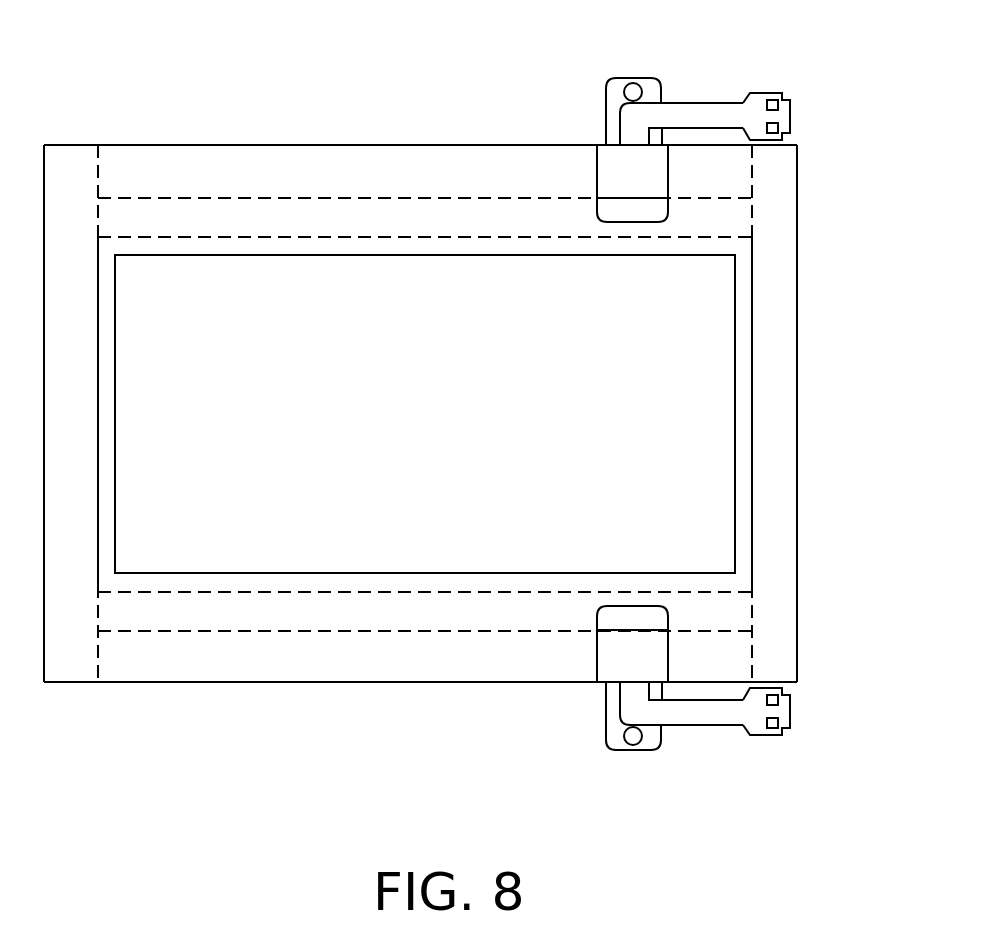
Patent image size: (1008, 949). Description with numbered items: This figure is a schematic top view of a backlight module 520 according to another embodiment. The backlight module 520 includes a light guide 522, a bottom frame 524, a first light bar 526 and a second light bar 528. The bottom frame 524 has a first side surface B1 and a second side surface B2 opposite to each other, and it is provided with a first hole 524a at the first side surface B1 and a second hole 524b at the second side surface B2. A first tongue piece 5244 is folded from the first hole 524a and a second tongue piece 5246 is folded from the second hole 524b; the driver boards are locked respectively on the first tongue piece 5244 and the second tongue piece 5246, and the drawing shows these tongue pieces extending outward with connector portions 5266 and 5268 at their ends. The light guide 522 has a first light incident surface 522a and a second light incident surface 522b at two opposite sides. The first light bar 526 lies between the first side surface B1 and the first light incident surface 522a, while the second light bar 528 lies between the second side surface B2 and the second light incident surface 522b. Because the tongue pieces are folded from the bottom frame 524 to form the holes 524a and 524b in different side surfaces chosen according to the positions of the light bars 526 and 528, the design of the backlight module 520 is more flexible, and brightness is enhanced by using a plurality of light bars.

The backlight module 520 is at (865, 896).
The light guide 522 is at (752, 342).
The first light incident surface 522a is at (720, 593).
The second light incident surface 522b is at (722, 236).
The bottom frame 524 is at (778, 279).
The first hole 524a is at (622, 609).
The second hole 524b is at (622, 218).
The first tongue piece 5244 is at (634, 748).
The second tongue piece 5246 is at (634, 78).
The first connector 5266 is at (755, 723).
The second connector 5268 is at (757, 103).
The first light bar 526 is at (753, 638).
The second light bar 528 is at (752, 196).
The first side surface B1 is at (473, 685).
The second side surface B2 is at (473, 143).